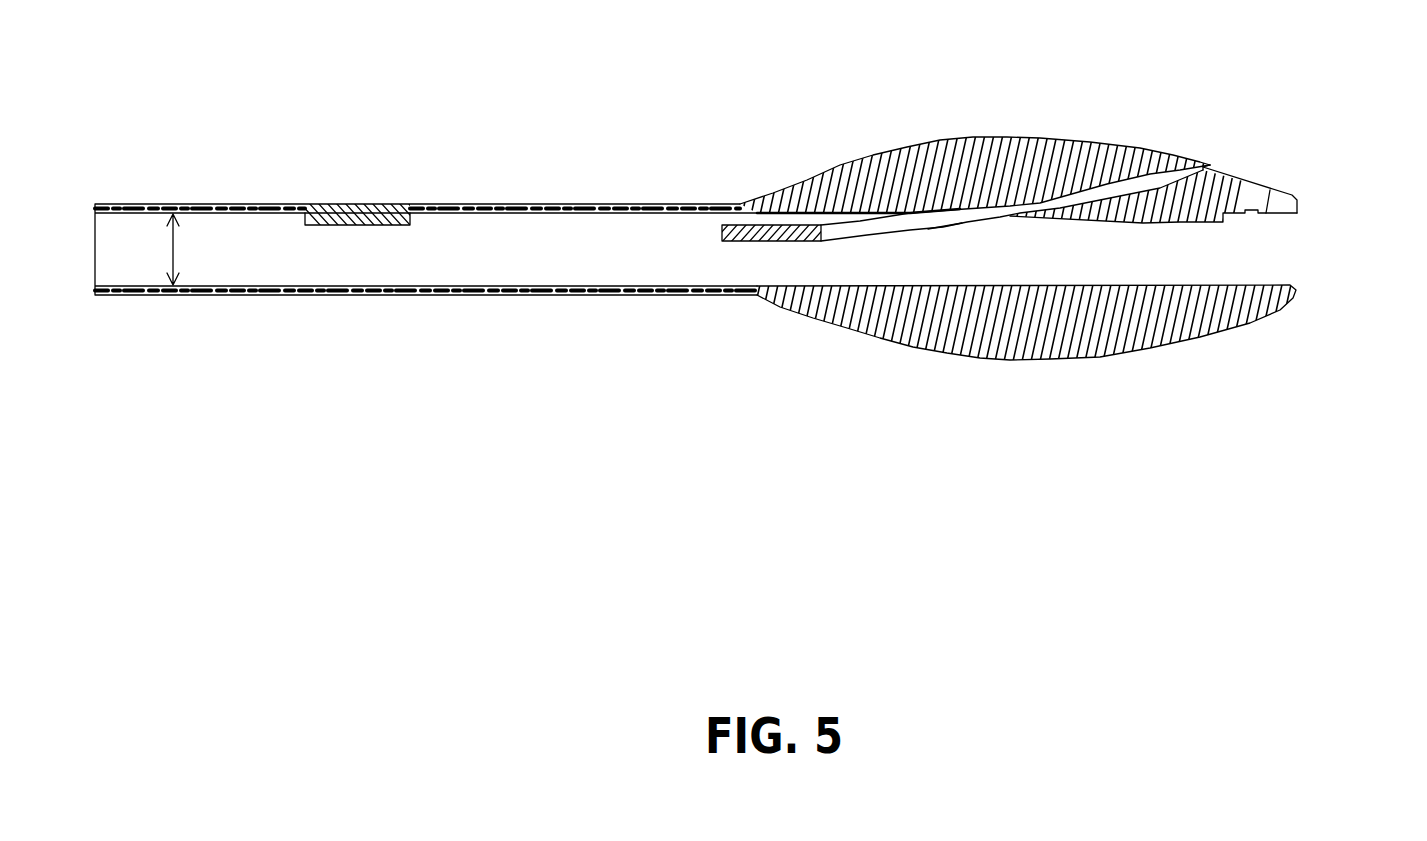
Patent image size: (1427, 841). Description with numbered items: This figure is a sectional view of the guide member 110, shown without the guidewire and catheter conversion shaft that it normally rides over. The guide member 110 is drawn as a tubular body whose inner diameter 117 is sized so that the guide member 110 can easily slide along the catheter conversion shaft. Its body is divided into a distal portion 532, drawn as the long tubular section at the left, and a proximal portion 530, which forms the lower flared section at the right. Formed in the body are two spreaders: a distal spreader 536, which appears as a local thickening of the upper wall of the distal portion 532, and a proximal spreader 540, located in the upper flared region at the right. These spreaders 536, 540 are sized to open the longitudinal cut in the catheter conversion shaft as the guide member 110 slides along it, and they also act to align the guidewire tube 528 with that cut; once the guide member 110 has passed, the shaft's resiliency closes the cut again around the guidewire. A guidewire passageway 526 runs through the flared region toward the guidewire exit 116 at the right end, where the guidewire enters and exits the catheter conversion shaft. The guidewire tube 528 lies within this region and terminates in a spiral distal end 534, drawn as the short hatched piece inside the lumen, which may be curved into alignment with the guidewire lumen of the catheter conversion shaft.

The guide member 110 is at (877, 153).
The guidewire exit 116 is at (1212, 165).
The inner diameter 117 is at (172, 242).
The guidewire passageway 526 is at (1110, 187).
The guidewire tube 528 is at (943, 227).
The proximal portion 530 is at (1250, 323).
The distal portion 532 is at (397, 295).
The spiral distal end 534 is at (745, 243).
The distal spreader 536 is at (365, 210).
The proximal spreader 540 is at (1213, 223).